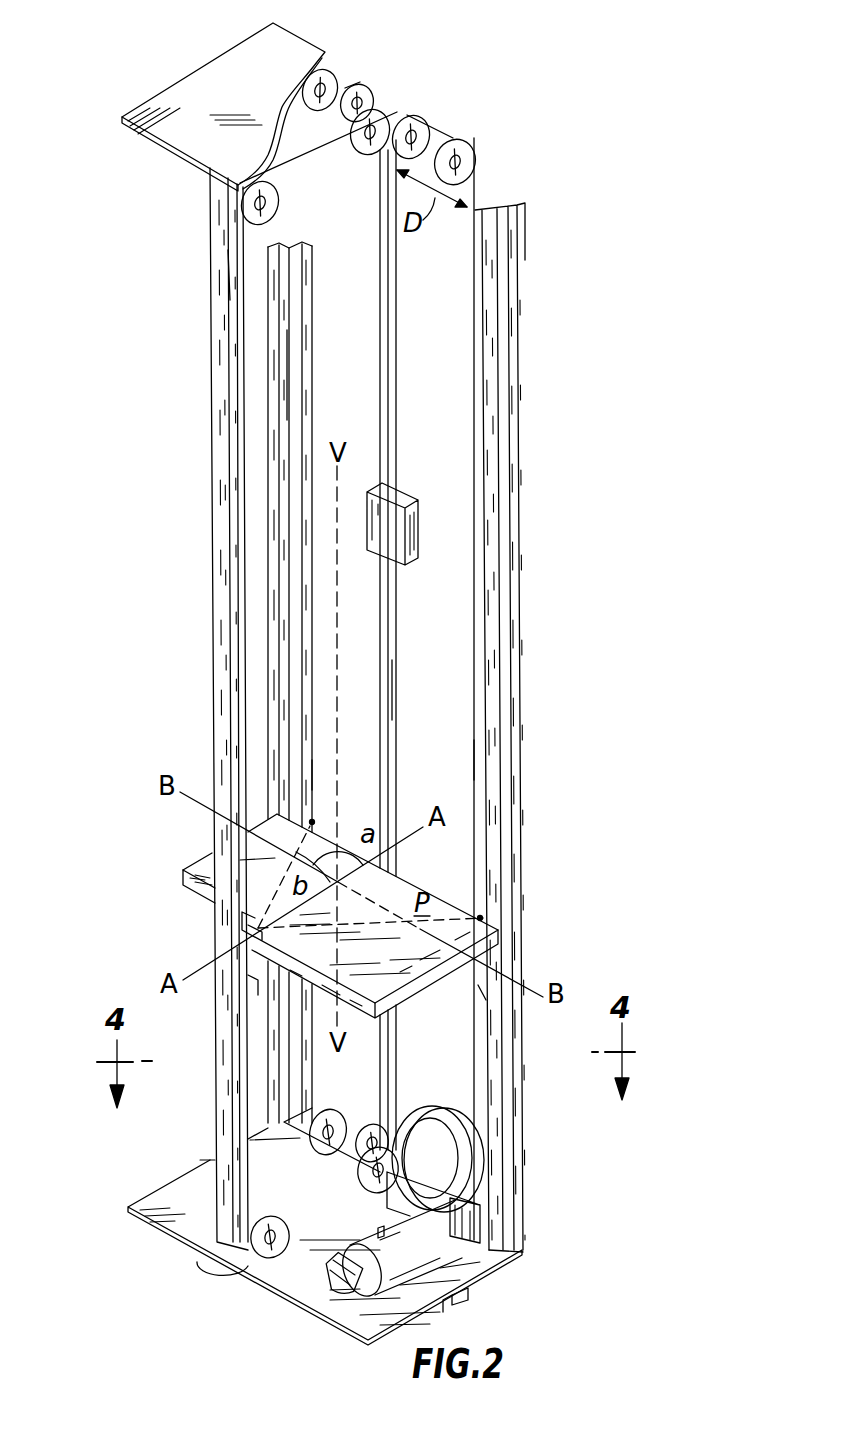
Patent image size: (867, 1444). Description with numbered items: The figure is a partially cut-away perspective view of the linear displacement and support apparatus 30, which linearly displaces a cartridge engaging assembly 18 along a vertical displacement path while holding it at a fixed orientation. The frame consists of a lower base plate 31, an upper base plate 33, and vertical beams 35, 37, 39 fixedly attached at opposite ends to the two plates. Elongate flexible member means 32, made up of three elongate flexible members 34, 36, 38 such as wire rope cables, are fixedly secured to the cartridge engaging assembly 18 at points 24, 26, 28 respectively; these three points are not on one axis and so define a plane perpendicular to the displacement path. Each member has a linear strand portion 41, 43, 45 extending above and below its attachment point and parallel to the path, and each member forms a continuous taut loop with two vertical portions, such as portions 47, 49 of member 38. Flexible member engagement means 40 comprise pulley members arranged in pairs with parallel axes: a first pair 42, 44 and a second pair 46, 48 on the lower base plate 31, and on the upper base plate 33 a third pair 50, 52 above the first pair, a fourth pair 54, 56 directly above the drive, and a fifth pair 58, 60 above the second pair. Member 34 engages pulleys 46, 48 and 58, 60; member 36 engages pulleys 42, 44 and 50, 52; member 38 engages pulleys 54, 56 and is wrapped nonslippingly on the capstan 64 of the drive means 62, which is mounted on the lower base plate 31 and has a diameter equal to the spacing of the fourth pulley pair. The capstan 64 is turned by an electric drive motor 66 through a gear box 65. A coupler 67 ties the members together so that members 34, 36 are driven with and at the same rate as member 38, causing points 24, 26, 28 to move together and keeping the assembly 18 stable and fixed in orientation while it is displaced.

The cartridge engaging assembly 18 is at (403, 890).
The attachment point 24 is at (260, 933).
The attachment point 26 is at (312, 822).
The attachment point 28 is at (478, 917).
The linear displacement and support apparatus 30 is at (115, 57).
The lower base plate 31 is at (178, 1222).
The elongate flexible member means 32 is at (397, 380).
The upper base plate 33 is at (230, 60).
The elongate flexible member 34 is at (305, 220).
The vertical beam 35 is at (215, 663).
The elongate flexible member 36 is at (242, 287).
The vertical beam 37 is at (287, 387).
The elongate flexible member 38 is at (473, 300).
The vertical beam 39 is at (515, 455).
The flexible member engagement means 40 is at (393, 106).
The linear strand portion 41 is at (313, 773).
The pulley member 42 is at (302, 1207).
The linear strand portion 43 is at (253, 985).
The pulley member 44 is at (358, 1190).
The linear strand portion 45 is at (478, 993).
The pulley member 46 is at (328, 1115).
The vertical portion 47 is at (398, 693).
The pulley member 48 is at (380, 1112).
The vertical portion 49 is at (475, 758).
The pulley member 50 is at (275, 200).
The pulley member 52 is at (367, 157).
The pulley member 54 is at (450, 137).
The pulley member 56 is at (412, 120).
The pulley member 58 is at (353, 90).
The pulley member 60 is at (305, 98).
The drive means 62 is at (453, 1262).
The capstan 64 is at (440, 1110).
The gear box 65 is at (387, 1208).
The electric drive motor 66 is at (392, 1280).
The coupler 67 is at (413, 502).